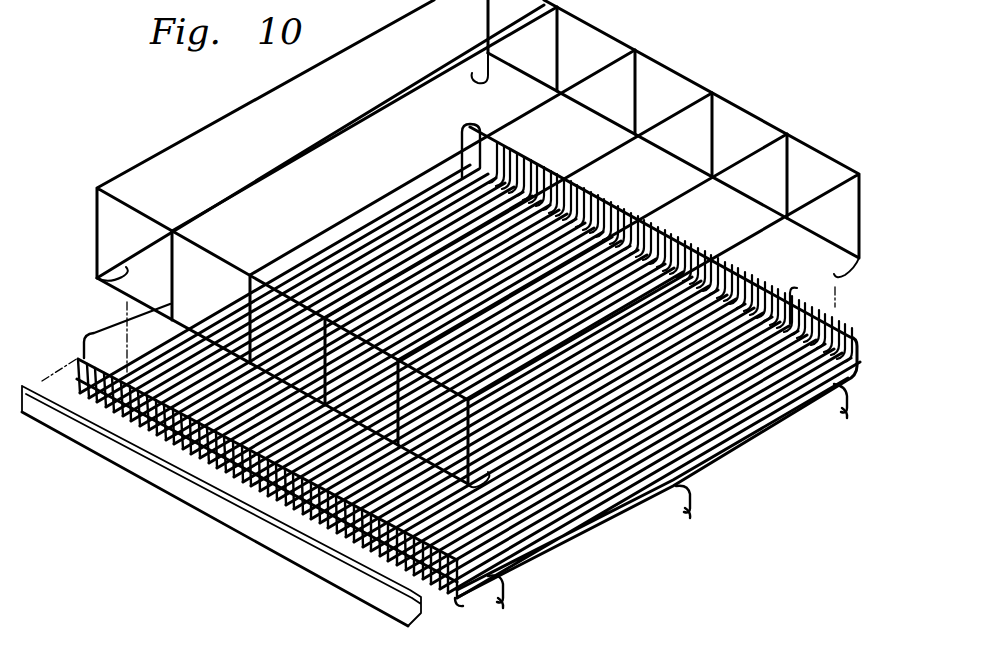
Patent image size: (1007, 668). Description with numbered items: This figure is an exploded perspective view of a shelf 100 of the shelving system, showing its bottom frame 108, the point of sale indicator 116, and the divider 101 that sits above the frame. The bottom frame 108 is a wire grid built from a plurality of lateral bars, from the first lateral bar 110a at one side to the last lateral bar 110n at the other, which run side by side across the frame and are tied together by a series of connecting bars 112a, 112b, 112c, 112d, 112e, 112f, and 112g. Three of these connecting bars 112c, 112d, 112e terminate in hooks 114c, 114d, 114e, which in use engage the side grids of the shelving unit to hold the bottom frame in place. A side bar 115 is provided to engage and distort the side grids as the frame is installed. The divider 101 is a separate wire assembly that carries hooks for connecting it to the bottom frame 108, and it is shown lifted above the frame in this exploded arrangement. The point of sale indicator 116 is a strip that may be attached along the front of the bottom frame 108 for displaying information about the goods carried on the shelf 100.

The shelf 100 is at (451, 373).
The divider 101 is at (678, 68).
The bottom frame 108 is at (594, 526).
The lateral bar 110a is at (383, 217).
The lateral bar 110n is at (606, 496).
The connecting bar 112a is at (85, 356).
The connecting bar 112b is at (446, 592).
The connecting bar 112c is at (506, 576).
The connecting bar 112d is at (692, 488).
The connecting bar 112e is at (843, 405).
The connecting bar 112f is at (476, 142).
The connecting bar 112g is at (812, 270).
The hook 114c is at (507, 601).
The hook 114d is at (694, 506).
The hook 114e is at (845, 424).
The side bar 115 is at (312, 203).
The point of sale indicator 116 is at (113, 461).